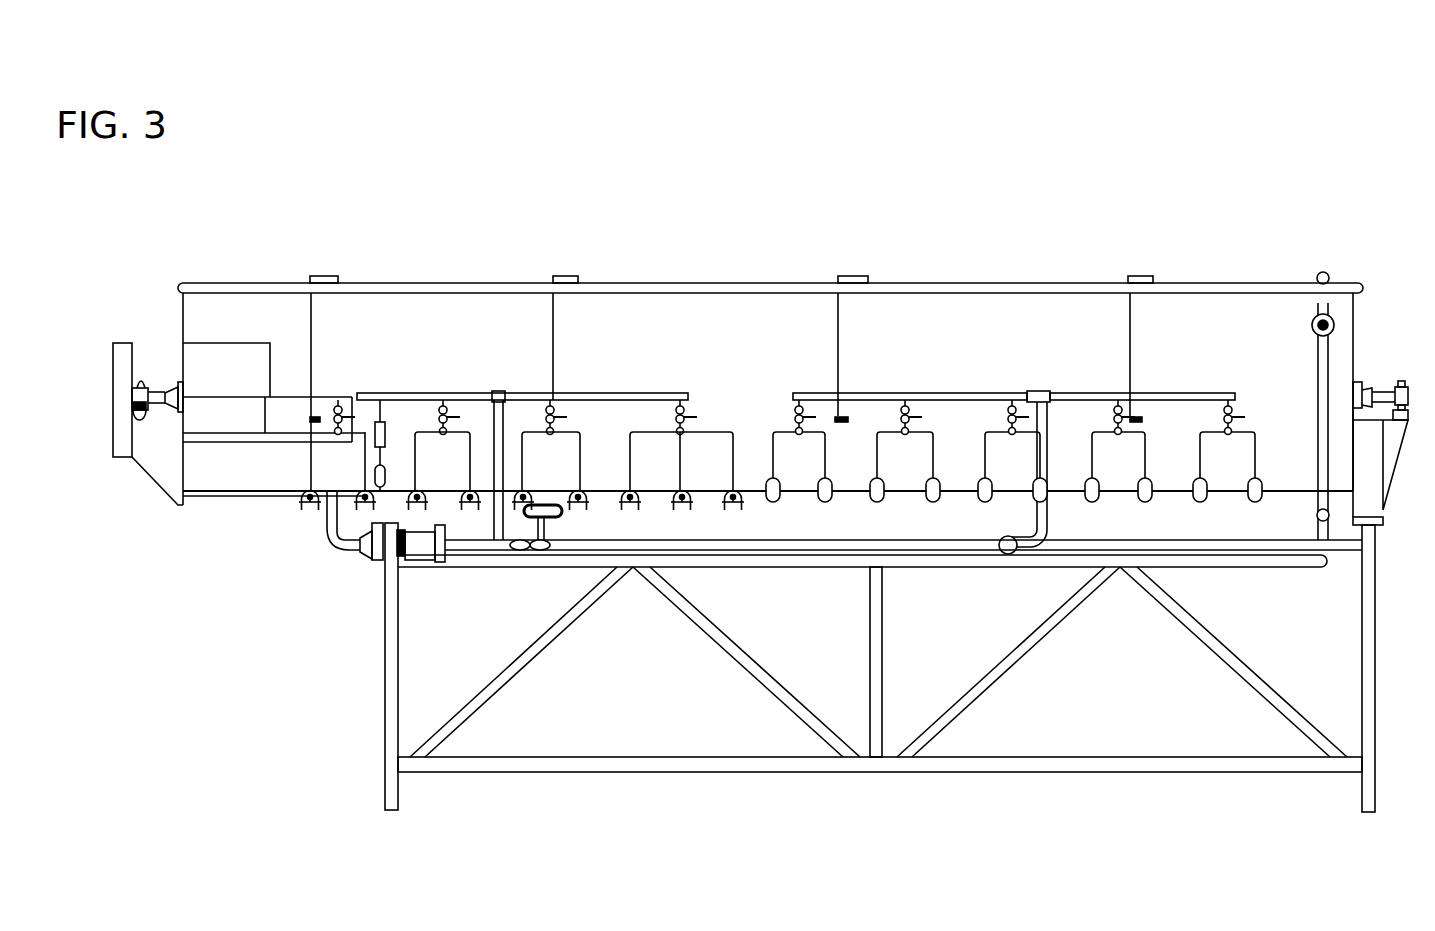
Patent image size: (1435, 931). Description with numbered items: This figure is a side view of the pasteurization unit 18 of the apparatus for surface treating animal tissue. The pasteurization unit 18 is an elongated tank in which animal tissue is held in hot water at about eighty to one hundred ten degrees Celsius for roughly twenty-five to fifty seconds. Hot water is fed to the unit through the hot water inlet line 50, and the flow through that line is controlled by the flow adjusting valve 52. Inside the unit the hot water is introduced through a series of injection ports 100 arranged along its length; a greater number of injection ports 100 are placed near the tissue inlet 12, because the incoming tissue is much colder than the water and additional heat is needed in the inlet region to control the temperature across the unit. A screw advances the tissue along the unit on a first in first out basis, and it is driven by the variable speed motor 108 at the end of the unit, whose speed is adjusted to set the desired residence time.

The tissue inlet 12 is at (1267, 250).
The pasteurization unit 18 is at (280, 268).
The hot water inlet line 50 is at (607, 397).
The flow adjusting valve 52 is at (556, 513).
The injection ports 100 is at (632, 513).
The variable speed motor 108 is at (121, 390).